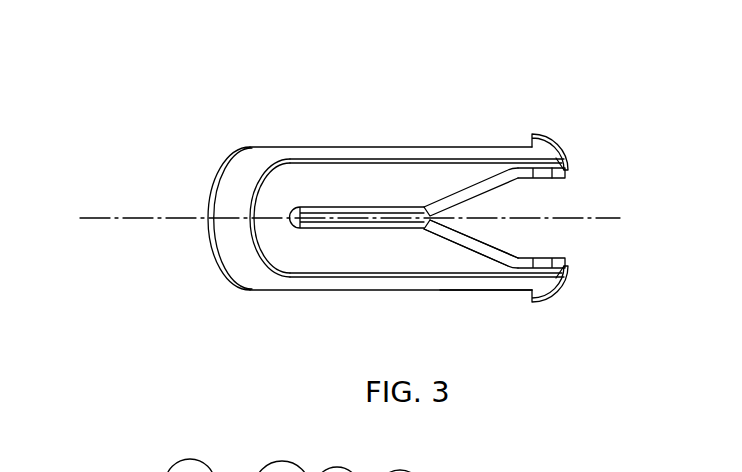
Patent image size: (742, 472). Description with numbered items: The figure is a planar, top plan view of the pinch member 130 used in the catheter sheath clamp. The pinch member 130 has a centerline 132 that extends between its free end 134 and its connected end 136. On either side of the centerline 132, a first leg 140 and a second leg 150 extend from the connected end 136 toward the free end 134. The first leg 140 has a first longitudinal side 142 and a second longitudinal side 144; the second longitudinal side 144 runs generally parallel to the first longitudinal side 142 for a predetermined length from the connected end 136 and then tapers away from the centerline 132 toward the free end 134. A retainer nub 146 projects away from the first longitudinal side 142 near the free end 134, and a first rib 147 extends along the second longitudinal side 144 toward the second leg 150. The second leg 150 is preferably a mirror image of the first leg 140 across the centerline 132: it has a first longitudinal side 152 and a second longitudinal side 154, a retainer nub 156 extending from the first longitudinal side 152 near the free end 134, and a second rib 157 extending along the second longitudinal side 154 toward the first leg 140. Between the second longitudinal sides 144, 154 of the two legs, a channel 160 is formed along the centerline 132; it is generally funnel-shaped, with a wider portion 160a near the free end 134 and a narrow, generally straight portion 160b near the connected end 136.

The pinch member 130 is at (180, 138).
The centerline 132 is at (170, 218).
The free end 134 is at (567, 290).
The connected end 136 is at (214, 262).
The first leg 140 is at (476, 292).
The first longitudinal side 142 is at (331, 291).
The second longitudinal side 144 is at (568, 267).
The retainer nub 146 is at (537, 304).
The first rib 147 is at (483, 252).
The second leg 150 is at (414, 146).
The first longitudinal side 152 is at (350, 146).
The second longitudinal side 154 is at (572, 163).
The retainer nub 156 is at (537, 134).
The second rib 157 is at (561, 162).
The channel 160 is at (517, 230).
The wider portion 160a is at (525, 200).
The narrow, generally straight portion 160b is at (330, 211).